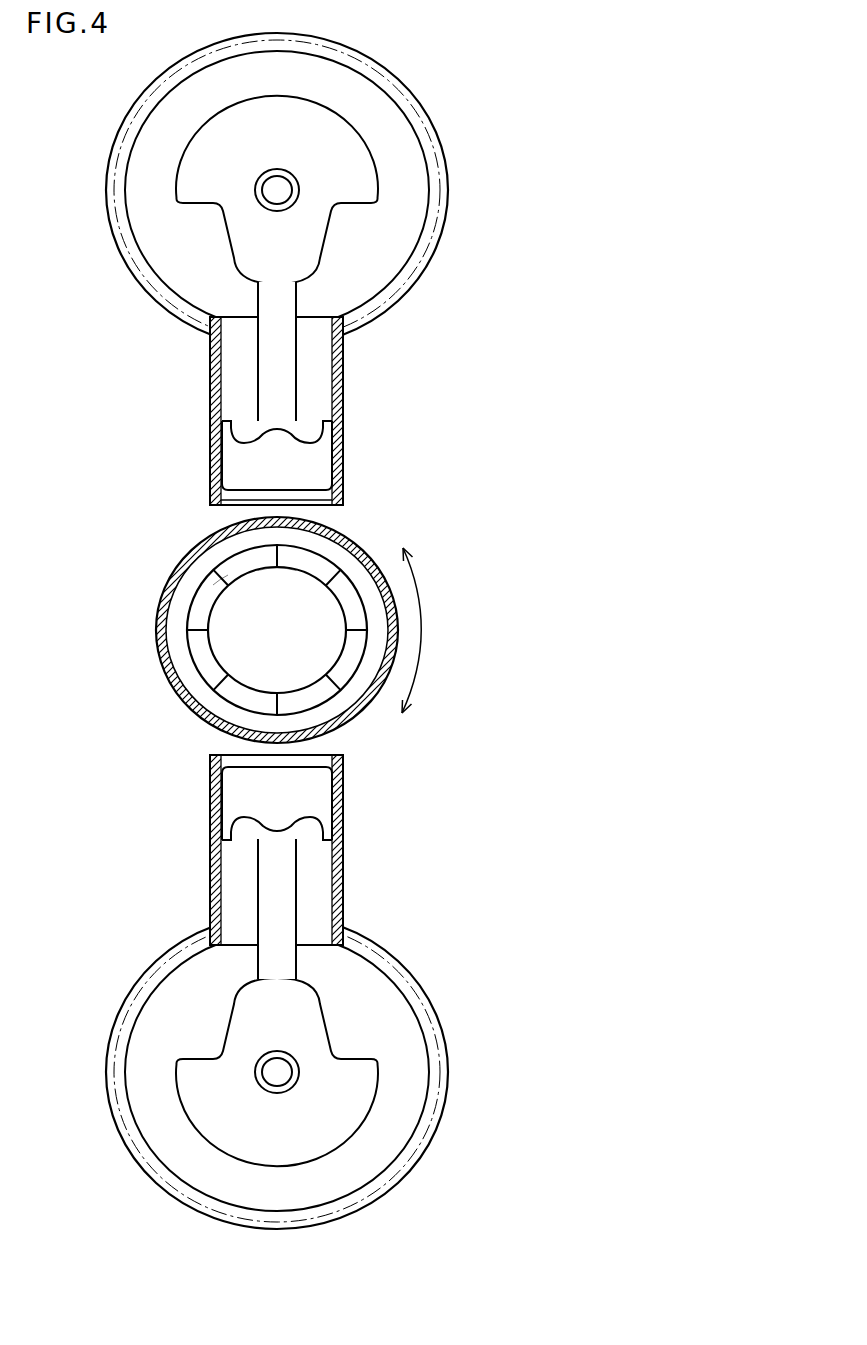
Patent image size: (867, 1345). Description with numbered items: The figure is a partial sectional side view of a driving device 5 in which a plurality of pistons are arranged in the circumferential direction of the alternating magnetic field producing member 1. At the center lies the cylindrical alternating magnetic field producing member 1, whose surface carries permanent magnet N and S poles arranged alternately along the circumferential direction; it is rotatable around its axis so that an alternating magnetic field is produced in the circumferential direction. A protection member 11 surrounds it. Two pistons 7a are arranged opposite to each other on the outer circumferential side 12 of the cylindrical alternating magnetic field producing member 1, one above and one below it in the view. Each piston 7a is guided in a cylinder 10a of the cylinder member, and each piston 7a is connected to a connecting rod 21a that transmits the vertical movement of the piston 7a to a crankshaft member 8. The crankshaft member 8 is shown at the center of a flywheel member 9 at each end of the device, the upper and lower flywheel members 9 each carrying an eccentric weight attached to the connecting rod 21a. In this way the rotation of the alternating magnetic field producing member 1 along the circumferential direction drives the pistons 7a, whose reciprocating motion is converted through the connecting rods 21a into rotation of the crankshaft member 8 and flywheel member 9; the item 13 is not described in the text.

The driving device 5 is at (549, 108).
The crankshaft member 8 is at (294, 184).
The flywheel member 9 is at (370, 252).
The connecting rod 21a is at (278, 297).
The cylinder 10a is at (337, 399).
The piston 7a is at (307, 466).
The protection member 11 is at (158, 634).
The outer circumferential side 12 is at (330, 548).
The magnetic pole 13 is at (300, 577).
The alternating magnetic field producing member 1 is at (208, 580).